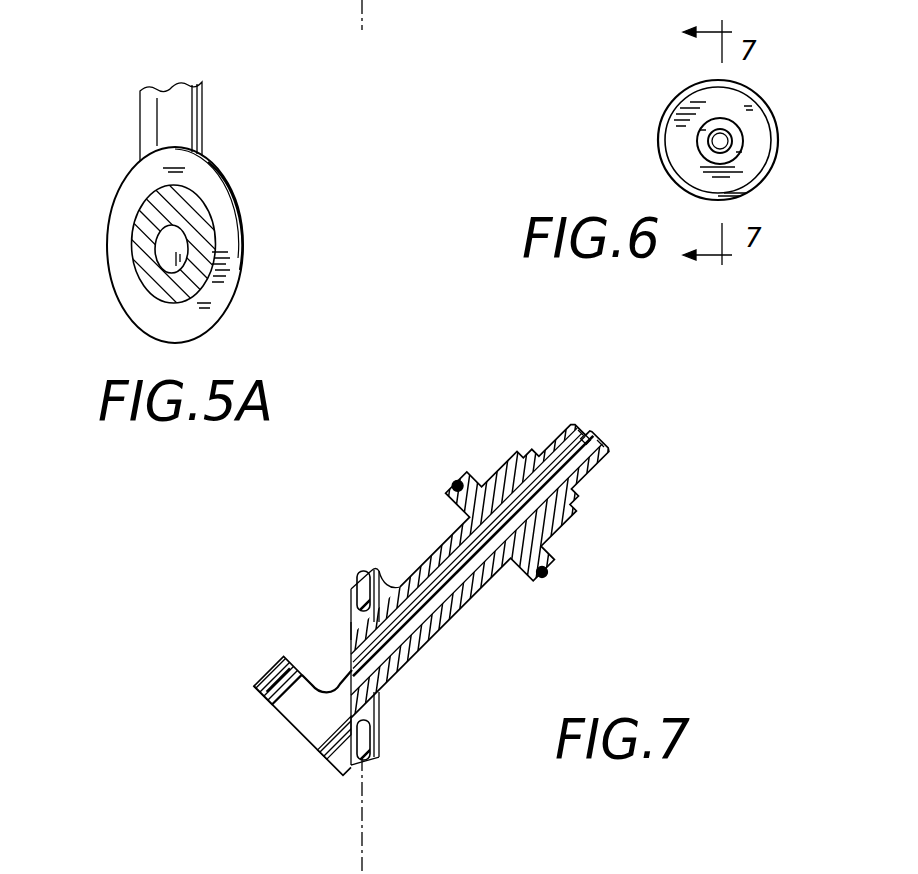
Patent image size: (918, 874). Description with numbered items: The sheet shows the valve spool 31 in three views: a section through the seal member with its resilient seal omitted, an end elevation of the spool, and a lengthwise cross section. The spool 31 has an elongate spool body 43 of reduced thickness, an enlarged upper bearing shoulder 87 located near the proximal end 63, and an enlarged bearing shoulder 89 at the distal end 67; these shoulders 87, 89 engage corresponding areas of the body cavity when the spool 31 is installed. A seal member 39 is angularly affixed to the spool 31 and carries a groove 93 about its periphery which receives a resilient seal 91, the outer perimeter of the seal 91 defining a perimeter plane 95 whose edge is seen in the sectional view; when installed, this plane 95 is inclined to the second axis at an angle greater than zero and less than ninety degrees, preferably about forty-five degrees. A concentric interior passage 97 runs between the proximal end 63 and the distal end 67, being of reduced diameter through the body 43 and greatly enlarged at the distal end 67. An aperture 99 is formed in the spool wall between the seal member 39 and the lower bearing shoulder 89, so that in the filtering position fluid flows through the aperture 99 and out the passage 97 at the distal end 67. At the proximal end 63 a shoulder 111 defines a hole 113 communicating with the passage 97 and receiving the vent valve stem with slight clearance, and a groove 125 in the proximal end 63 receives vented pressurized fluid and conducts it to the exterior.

In FIG. 6, the valve spool 31 is at (643, 114).
In FIG. 7, the valve spool 31 is at (636, 572).
In FIG. 5A, the seal member 39 is at (135, 170).
In FIG. 7, the seal member 39 is at (380, 717).
In FIG. 5A, the spool body 43 is at (205, 117).
In FIG. 6, the spool body 43 is at (736, 152).
In FIG. 7, the spool body 43 is at (448, 612).
In FIG. 7, the proximal end 63 is at (592, 508).
In FIG. 7, the distal end 67 is at (255, 690).
In FIG. 7, the upper bearing shoulder 87 is at (547, 553).
In FIG. 6, the bearing shoulder 89 is at (760, 97).
In FIG. 7, the bearing shoulder 89 is at (267, 672).
In FIG. 7, the resilient seal 91 is at (362, 572).
In FIG. 7, the groove 93 is at (351, 621).
In FIG. 7, the perimeter plane 95 is at (367, 782).
In FIG. 5A, the interior passage 97 is at (172, 244).
In FIG. 7, the interior passage 97 is at (423, 622).
In FIG. 7, the aperture 99 is at (325, 662).
In FIG. 7, the shoulder 111 is at (600, 452).
In FIG. 7, the hole 113 is at (585, 436).
In FIG. 7, the groove 125 is at (591, 440).